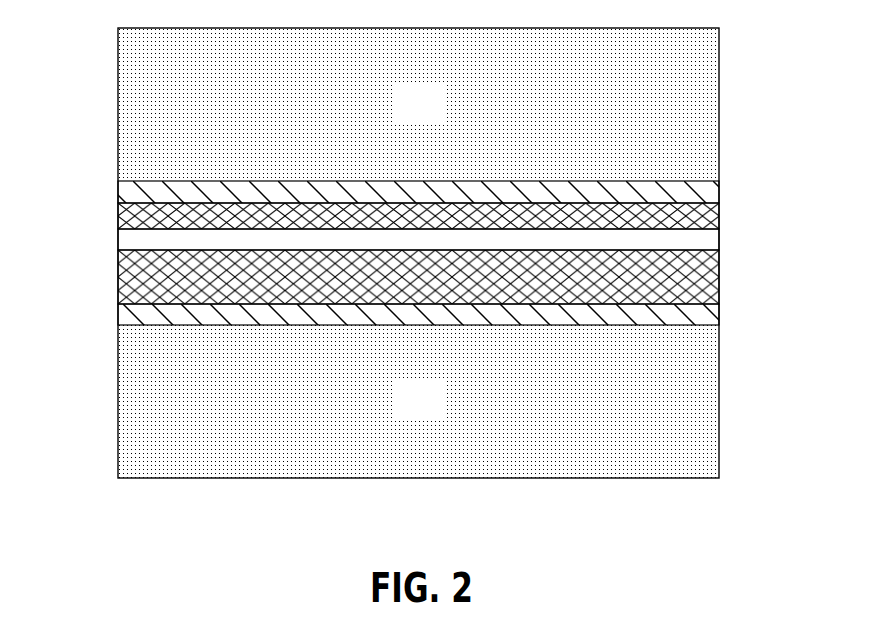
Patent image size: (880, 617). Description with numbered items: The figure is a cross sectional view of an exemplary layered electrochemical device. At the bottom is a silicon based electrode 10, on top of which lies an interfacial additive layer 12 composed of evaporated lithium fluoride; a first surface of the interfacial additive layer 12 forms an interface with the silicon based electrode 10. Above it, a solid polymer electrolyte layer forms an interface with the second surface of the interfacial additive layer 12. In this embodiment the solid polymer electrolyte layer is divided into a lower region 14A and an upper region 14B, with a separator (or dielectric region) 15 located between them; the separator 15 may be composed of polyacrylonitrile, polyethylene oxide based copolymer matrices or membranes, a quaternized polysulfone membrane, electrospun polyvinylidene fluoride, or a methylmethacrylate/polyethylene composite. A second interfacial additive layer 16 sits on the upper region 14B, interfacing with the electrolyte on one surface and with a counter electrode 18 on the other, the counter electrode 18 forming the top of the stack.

The silicon based electrode 10 is at (436, 413).
The interfacial additive layer 12 is at (133, 314).
The lower region of the solid polymer electrolyte layer 14A is at (705, 278).
The upper region of the solid polymer electrolyte layer 14B is at (705, 215).
The separator 15 is at (133, 239).
The second interfacial additive layer 16 is at (133, 192).
The counter electrode 18 is at (435, 118).